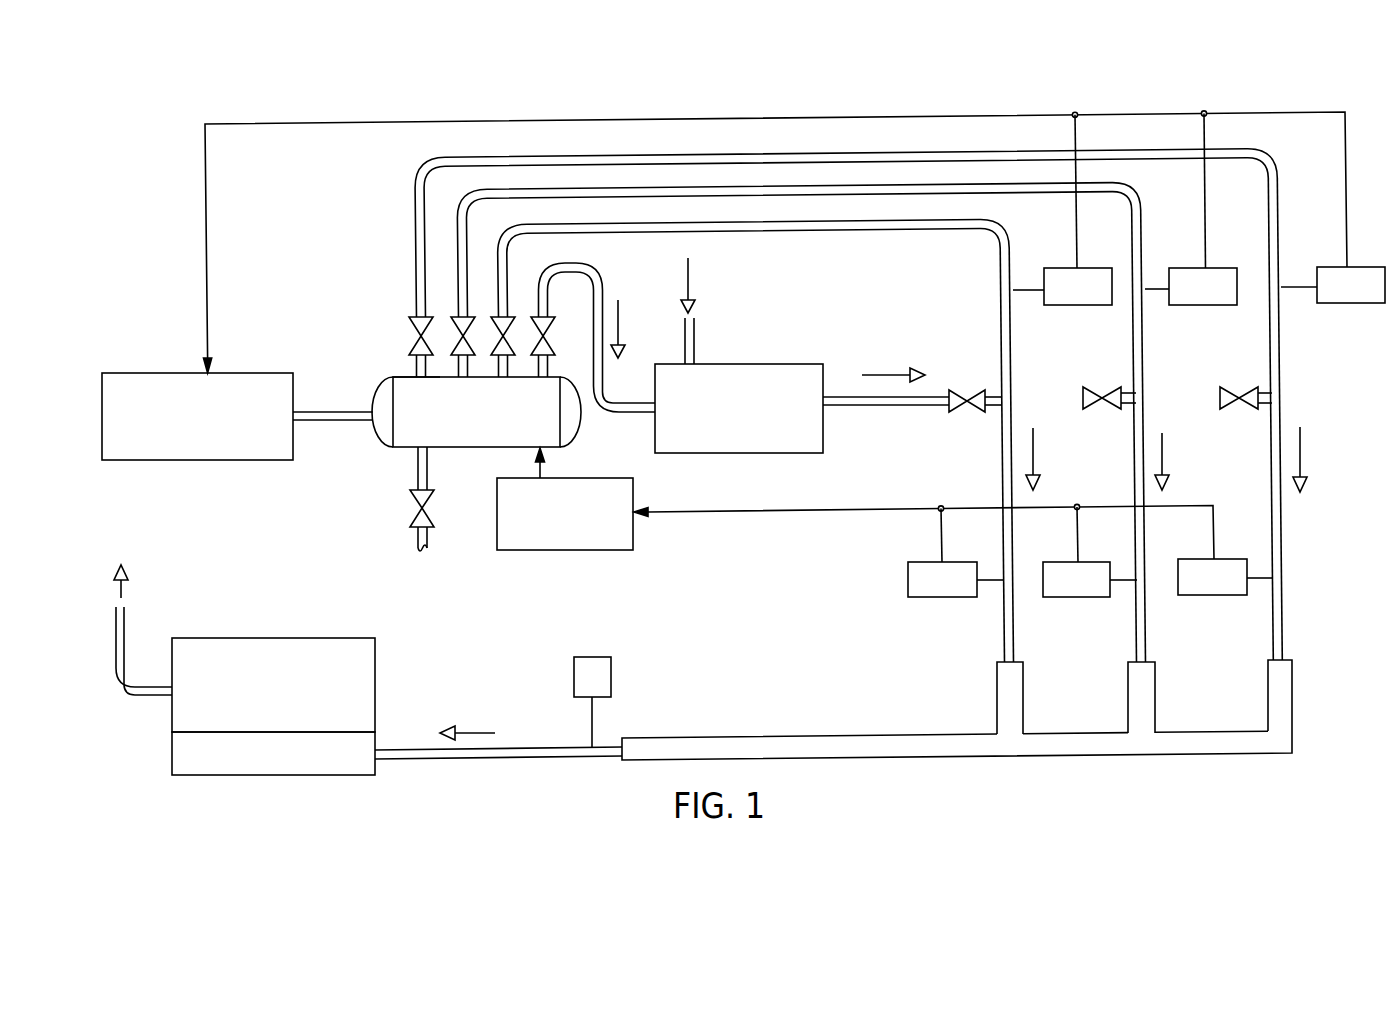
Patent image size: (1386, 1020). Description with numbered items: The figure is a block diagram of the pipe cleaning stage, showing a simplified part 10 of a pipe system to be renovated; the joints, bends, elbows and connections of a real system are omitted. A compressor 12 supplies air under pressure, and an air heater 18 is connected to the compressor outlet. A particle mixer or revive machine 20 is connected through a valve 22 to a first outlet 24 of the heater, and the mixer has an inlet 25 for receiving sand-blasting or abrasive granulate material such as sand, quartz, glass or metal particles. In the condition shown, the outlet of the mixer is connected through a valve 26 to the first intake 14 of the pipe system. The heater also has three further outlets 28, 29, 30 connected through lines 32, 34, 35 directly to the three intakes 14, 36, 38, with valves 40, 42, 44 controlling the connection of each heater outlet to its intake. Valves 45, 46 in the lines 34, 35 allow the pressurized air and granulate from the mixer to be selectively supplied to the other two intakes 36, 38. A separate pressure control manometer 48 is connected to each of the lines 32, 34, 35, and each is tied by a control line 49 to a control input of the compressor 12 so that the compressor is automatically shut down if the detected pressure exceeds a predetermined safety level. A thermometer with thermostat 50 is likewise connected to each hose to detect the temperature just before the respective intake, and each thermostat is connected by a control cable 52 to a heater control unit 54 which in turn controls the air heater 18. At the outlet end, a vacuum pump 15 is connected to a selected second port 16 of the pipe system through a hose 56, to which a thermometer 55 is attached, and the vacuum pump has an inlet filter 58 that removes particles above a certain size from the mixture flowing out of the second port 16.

The pipe system part 10 is at (972, 773).
The compressor 12 is at (224, 372).
The first intake 14 is at (996, 684).
The vacuum pump 15 is at (311, 637).
The second port 16 is at (636, 738).
The air heater 18 is at (402, 452).
The particle mixer 20 is at (792, 362).
The valve 22 is at (541, 323).
The first outlet 24 is at (549, 365).
The inlet 25 is at (698, 341).
The valve 26 is at (966, 410).
The heater outlet 28 is at (496, 358).
The heater outlet 29 is at (415, 374).
The heater outlet 30 is at (412, 357).
The line 32 is at (1013, 352).
The line 34 is at (1145, 350).
The line 35 is at (1283, 352).
The intake 36 is at (1155, 688).
The intake 38 is at (1292, 677).
The valve 40 is at (505, 312).
The valve 42 is at (466, 312).
The valve 44 is at (418, 314).
The valve 45 is at (1112, 406).
The valve 46 is at (1245, 406).
The pressure control manometer 48 is at (1058, 268).
The control line 49 is at (835, 117).
The thermometer with thermostat 50 is at (933, 598).
The control cable 52 is at (742, 512).
The heater control unit 54 is at (583, 552).
The thermometer 55 is at (612, 662).
The hose 56 is at (460, 759).
The inlet filter 58 is at (335, 774).